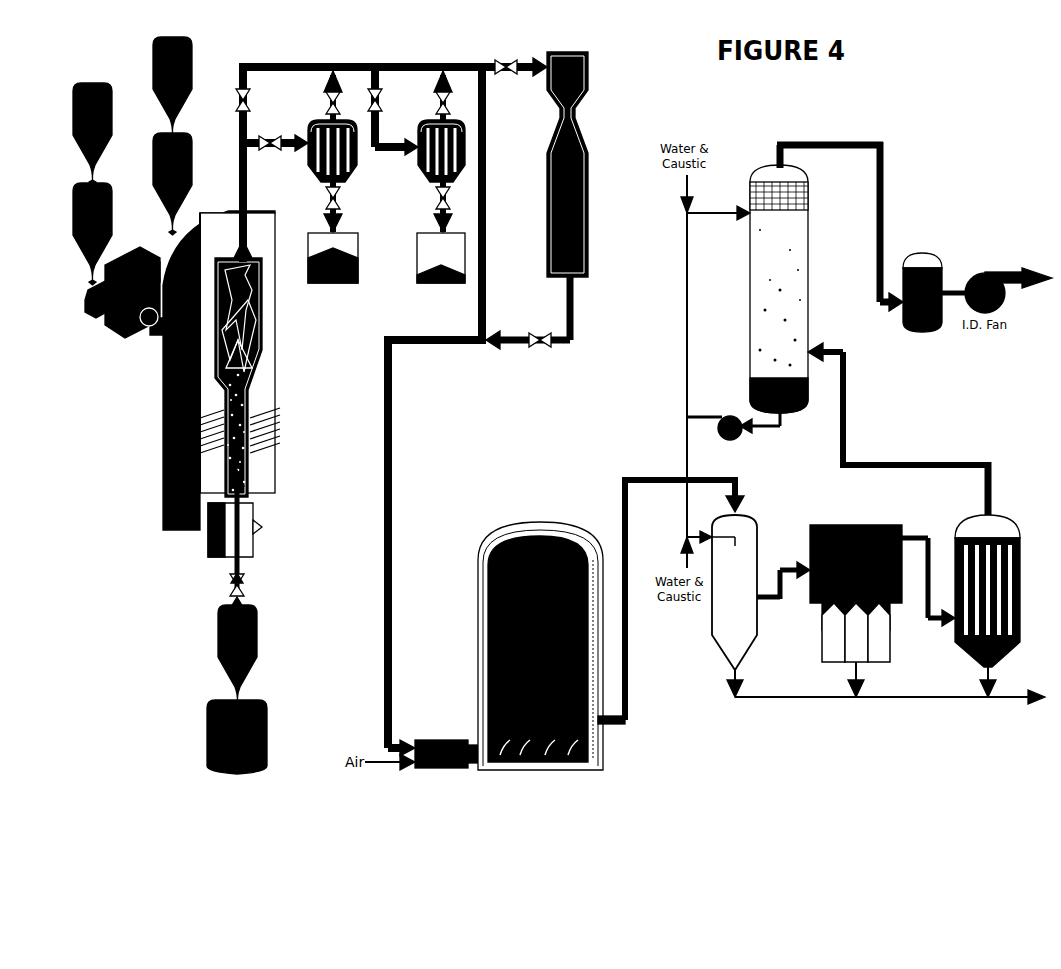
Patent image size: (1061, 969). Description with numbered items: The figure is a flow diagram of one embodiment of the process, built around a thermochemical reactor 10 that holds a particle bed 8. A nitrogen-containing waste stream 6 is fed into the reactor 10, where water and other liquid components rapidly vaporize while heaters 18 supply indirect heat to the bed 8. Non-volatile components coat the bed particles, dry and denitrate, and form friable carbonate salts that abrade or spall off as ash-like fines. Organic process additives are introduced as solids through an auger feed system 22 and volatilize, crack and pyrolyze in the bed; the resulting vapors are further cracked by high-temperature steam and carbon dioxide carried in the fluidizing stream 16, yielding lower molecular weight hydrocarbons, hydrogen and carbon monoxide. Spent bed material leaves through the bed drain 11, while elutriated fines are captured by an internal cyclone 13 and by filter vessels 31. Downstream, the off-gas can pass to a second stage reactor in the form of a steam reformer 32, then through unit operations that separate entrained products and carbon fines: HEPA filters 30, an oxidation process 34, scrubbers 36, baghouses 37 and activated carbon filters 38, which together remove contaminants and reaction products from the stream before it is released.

The waste stream 6 is at (148, 368).
The bed 8 is at (258, 355).
The thermochemical reactor 10 is at (233, 328).
The bed drain 11 is at (231, 640).
The internal cyclone 13 is at (262, 250).
The fluidizing stream 16 is at (288, 512).
The heaters 18 is at (251, 433).
The auger feed system 22 is at (132, 187).
The HEPA filters 30 is at (664, 384).
The filter vessels 31 is at (225, 734).
The steam reformer 32 is at (549, 200).
The oxidation processes 34 is at (579, 625).
The scrubbers 36 is at (837, 419).
The baghouses 37 is at (882, 600).
The activated carbon filters 38 is at (922, 284).